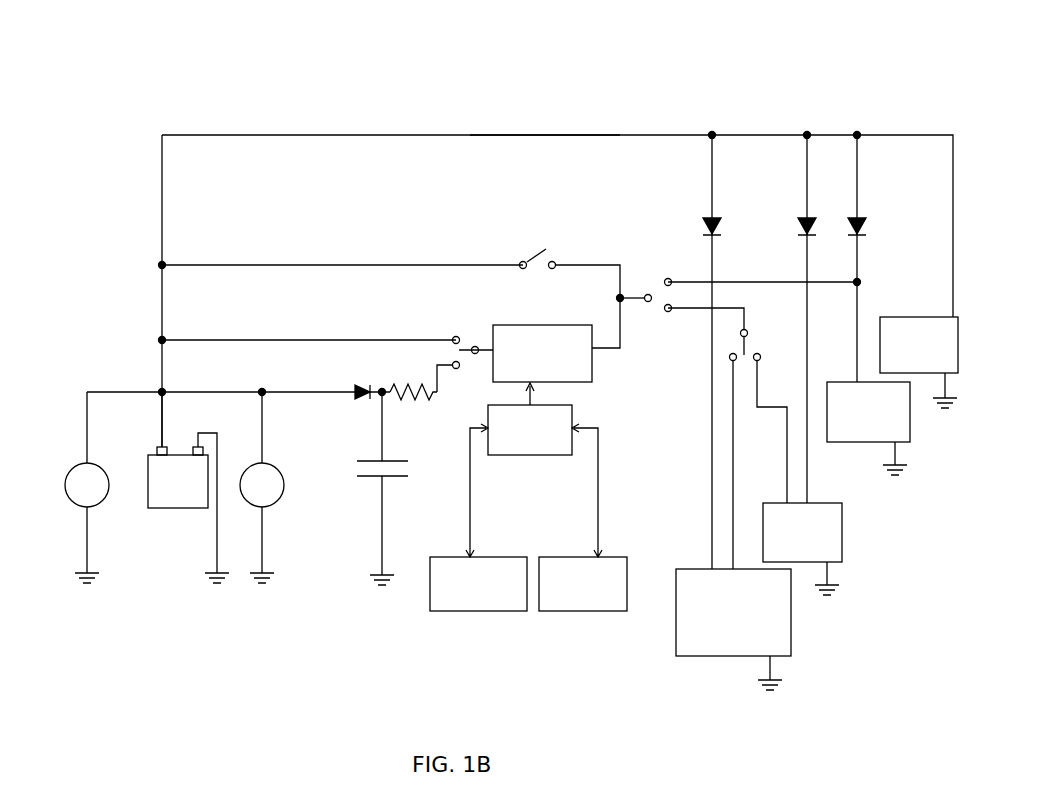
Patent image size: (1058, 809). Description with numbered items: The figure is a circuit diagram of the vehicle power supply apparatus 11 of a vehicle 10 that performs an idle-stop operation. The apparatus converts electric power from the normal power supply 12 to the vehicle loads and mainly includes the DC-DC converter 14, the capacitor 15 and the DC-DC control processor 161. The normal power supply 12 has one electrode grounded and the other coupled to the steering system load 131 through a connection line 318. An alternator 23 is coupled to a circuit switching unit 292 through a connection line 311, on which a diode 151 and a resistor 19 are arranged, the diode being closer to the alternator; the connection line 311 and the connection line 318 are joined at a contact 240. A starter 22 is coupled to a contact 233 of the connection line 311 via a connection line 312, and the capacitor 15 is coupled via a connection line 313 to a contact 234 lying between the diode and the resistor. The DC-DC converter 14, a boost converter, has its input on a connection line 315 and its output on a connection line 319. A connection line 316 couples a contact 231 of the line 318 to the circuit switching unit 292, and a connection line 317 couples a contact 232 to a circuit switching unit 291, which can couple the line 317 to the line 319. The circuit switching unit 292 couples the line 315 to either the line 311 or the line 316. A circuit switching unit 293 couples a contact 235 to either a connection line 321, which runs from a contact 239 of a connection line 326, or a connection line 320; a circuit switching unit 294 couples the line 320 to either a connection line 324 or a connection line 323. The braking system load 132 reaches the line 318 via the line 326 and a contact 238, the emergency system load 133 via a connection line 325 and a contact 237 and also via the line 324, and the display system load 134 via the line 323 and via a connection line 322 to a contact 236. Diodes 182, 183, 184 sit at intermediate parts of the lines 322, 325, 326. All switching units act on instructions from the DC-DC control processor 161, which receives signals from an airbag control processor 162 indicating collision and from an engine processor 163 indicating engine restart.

The vehicle 10 is at (470, 78).
The vehicle power supply apparatus 11 is at (550, 120).
The normal power supply 12 is at (178, 510).
The DC-DC converter 14 is at (537, 324).
The capacitor 15 is at (360, 478).
The resistor 19 is at (424, 402).
The starter 22 is at (272, 505).
The alternator 23 is at (100, 505).
The steering system load 131 is at (922, 315).
The braking system load 132 is at (860, 444).
The emergency system load 133 is at (845, 543).
The display system load 134 is at (793, 638).
The diode 151 is at (358, 402).
The DC-DC control processor 161 is at (536, 458).
The airbag control processor 162 is at (476, 613).
The engine processor 163 is at (582, 613).
The diode 182 is at (703, 228).
The diode 183 is at (798, 228).
The diode 184 is at (866, 228).
The contact 231 is at (158, 340).
The contact 232 is at (158, 265).
The contact 233 is at (262, 388).
The contact 234 is at (382, 388).
The contact 235 is at (622, 292).
The contact 236 is at (712, 131).
The contact 237 is at (807, 131).
The contact 238 is at (857, 131).
The contact 239 is at (861, 282).
The contact 240 is at (158, 390).
The circuit switching unit 291 is at (538, 256).
The circuit switching unit 292 is at (455, 336).
The circuit switching unit 293 is at (649, 302).
The circuit switching unit 294 is at (748, 337).
The connection line 311 is at (87, 425).
The connection line 312 is at (266, 430).
The connection line 313 is at (388, 445).
The connection line 315 is at (482, 348).
The connection line 316 is at (287, 337).
The connection line 317 is at (287, 262).
The connection line 318 is at (410, 133).
The connection line 319 is at (618, 262).
The connection line 320 is at (675, 312).
The connection line 321 is at (672, 280).
The connection line 322 is at (710, 387).
The connection line 323 is at (730, 423).
The connection line 324 is at (785, 457).
The connection line 325 is at (805, 262).
The connection line 326 is at (859, 180).